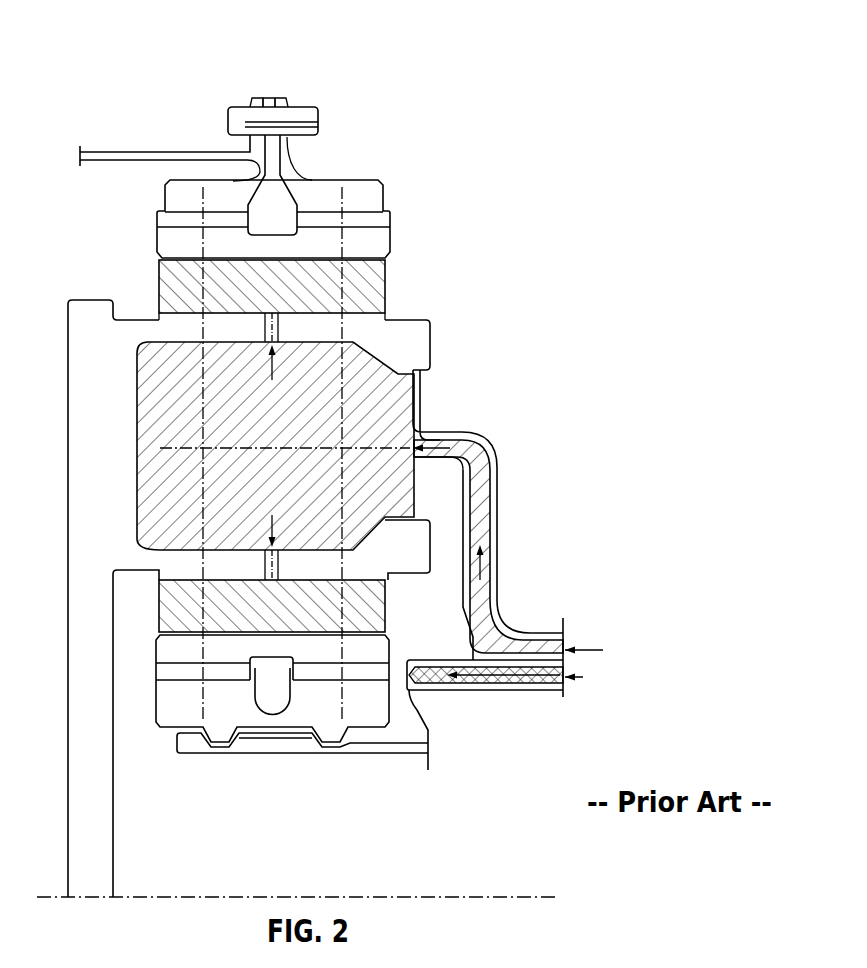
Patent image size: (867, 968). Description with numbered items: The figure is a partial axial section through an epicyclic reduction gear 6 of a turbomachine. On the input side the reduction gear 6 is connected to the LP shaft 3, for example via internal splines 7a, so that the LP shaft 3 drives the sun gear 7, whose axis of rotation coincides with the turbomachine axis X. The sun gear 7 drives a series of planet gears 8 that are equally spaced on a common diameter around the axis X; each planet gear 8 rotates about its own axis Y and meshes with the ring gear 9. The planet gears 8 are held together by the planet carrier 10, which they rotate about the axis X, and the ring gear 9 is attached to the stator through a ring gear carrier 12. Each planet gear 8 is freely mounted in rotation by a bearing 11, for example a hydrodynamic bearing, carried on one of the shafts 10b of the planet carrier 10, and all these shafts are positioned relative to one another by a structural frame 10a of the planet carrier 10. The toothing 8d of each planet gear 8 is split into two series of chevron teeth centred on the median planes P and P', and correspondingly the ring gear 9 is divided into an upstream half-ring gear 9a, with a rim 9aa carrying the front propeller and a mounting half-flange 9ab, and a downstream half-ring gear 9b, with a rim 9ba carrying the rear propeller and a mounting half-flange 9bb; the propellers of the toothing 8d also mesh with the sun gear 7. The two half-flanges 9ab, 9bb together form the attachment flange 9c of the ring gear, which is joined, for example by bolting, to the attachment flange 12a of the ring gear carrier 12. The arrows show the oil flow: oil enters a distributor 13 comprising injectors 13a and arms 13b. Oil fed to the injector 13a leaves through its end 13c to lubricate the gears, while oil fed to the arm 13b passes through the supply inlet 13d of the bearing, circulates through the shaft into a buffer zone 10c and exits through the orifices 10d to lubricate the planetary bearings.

The LP shaft 3 is at (393, 753).
The epicyclic reduction gear 6 is at (520, 265).
The sun gear 7 is at (167, 693).
The internal splines 7a is at (248, 737).
The planet gears 8 is at (160, 657).
The toothing of planet gear 8d is at (167, 673).
The ring gear 9 is at (384, 182).
The upstream half-ring gear 9a is at (175, 196).
The downstream half-ring gear 9b is at (370, 202).
The rim of upstream half-ring gear 9aa is at (182, 192).
The rim of downstream half-ring gear 9ba is at (330, 190).
The mounting half-flange of upstream half-ring gear 9ab is at (268, 100).
The mounting half-flange of downstream half-ring gear 9bb is at (280, 100).
The attachment flange of ring gear 9c is at (330, 46).
The planet carrier 10 is at (412, 330).
The structural frame of planet carrier 10a is at (80, 398).
The shaft of planet carrier 10b is at (418, 553).
The buffer zone 10c is at (230, 486).
The orifices 10d is at (278, 323).
The bearing 11 is at (385, 283).
The ring gear carrier 12 is at (120, 147).
The attachment flange of ring gear carrier 12a is at (250, 100).
The distributor 13 is at (557, 594).
The injectors 13a is at (507, 680).
The arms 13b is at (490, 503).
The end of injector 13c is at (438, 730).
The supply inlet of bearing 13d is at (418, 378).
The median plane of upstream teeth P is at (163, 712).
The median plane of downstream teeth P' is at (341, 747).
The axis of rotation of turbomachine X is at (505, 895).
The axis of planet gear Y is at (422, 431).